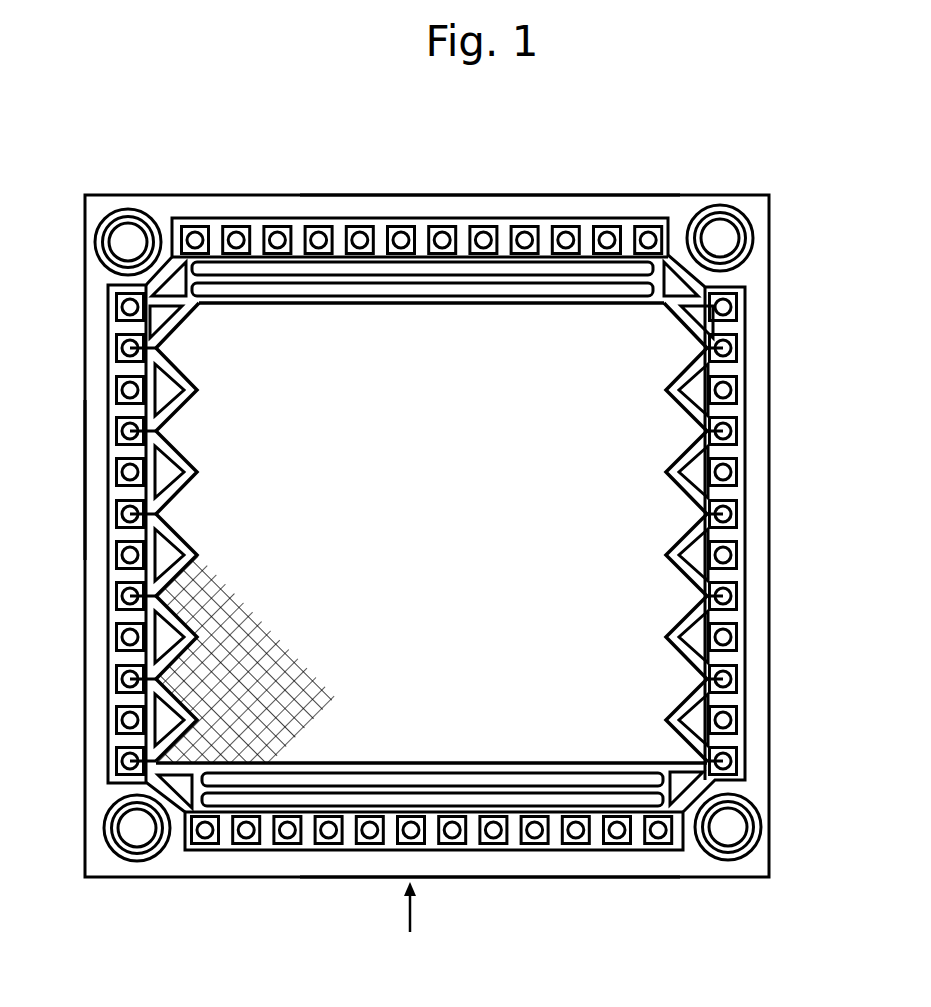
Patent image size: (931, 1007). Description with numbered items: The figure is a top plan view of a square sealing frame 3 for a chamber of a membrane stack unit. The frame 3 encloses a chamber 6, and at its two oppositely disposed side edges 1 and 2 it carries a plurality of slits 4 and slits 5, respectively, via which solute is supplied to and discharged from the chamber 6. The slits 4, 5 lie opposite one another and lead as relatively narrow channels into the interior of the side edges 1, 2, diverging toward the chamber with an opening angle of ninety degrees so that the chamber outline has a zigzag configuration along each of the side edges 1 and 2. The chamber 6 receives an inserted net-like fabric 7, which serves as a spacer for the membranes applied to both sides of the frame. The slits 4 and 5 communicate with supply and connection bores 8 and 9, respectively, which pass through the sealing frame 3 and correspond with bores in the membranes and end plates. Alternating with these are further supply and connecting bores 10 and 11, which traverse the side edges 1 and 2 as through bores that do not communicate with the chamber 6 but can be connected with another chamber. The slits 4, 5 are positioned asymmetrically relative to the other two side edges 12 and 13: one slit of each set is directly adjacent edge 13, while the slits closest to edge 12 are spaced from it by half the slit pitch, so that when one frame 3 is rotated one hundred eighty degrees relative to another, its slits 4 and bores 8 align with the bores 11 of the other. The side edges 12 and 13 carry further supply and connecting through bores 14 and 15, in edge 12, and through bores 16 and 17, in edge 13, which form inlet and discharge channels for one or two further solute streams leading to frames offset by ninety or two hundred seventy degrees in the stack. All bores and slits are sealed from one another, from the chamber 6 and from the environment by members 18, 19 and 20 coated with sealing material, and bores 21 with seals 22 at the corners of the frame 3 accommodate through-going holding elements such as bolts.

The side edge 1 is at (770, 545).
The side edge 2 is at (92, 482).
The sealing frame 3 is at (422, 909).
The slits 4 is at (700, 427).
The slits 5 is at (158, 430).
The chamber 6 is at (494, 491).
The net-like fabric 7 is at (258, 652).
The supply and connection bores 8 is at (731, 428).
The supply and connection bores 9 is at (122, 432).
The supply and connecting bores 10 is at (731, 470).
The supply and connecting bores 11 is at (160, 472).
The side edge 12 is at (490, 195).
The side edge 13 is at (525, 878).
The supply and connecting through bores 14 is at (276, 236).
The supply and connecting through bores 15 is at (318, 236).
The through bores 16 is at (206, 835).
The through bores 17 is at (247, 835).
The sealing members 18 is at (140, 672).
The sealing members 19 is at (383, 232).
The sealing members 20 is at (360, 292).
The bores 21 is at (726, 830).
The seals 22 is at (757, 838).